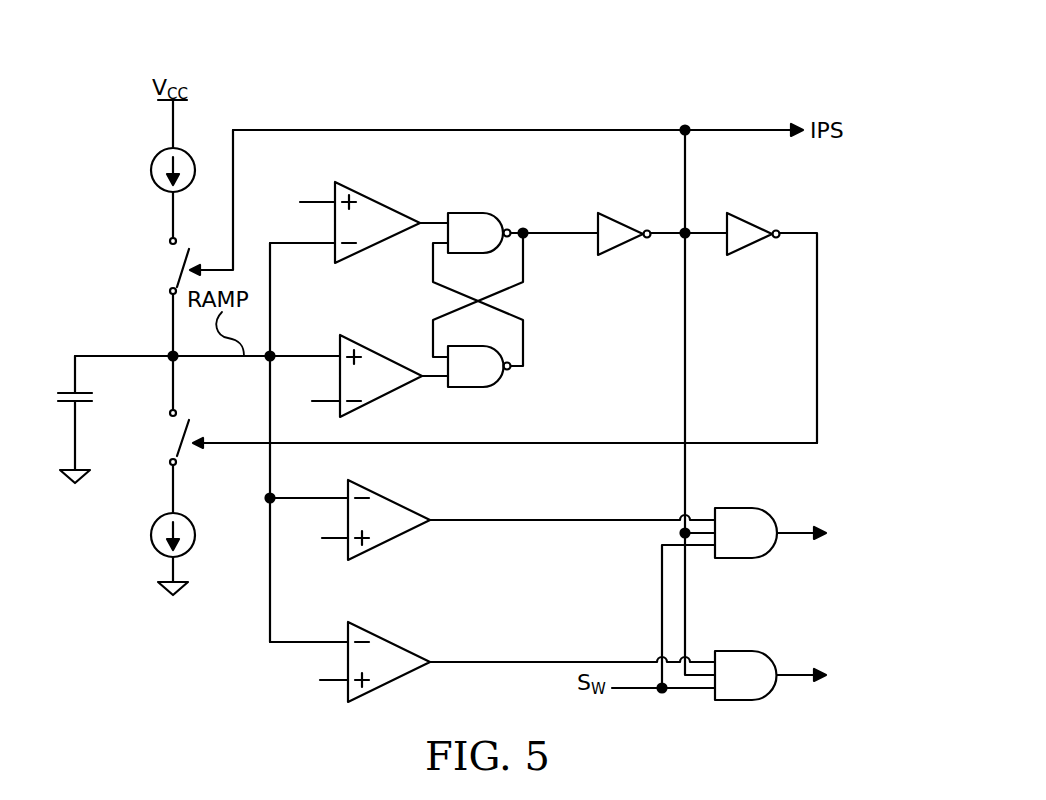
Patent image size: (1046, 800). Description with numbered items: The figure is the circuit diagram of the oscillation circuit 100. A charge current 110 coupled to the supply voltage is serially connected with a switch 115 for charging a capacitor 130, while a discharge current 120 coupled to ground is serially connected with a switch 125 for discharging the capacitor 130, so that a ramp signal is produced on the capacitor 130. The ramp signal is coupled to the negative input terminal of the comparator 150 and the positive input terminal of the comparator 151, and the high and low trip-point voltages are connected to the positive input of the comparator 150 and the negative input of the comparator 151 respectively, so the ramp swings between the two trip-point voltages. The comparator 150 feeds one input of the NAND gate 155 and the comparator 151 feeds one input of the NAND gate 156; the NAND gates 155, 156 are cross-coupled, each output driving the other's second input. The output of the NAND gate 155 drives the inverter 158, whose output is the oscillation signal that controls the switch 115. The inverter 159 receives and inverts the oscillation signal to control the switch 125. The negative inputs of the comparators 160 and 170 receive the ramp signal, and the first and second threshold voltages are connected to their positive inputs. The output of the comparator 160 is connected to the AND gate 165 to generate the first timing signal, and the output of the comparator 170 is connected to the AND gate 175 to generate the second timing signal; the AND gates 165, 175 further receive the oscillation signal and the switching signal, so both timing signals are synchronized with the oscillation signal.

The oscillation circuit 100 is at (902, 83).
The charge current 110 is at (152, 170).
The switch 115 is at (184, 268).
The discharge current 120 is at (152, 548).
The switch 125 is at (181, 440).
The capacitor 130 is at (58, 392).
The comparator 150 is at (362, 194).
The comparator 151 is at (362, 342).
The NAND gate 155 is at (470, 213).
The NAND gate 156 is at (472, 388).
The inverter 158 is at (620, 250).
The inverter 159 is at (748, 250).
The comparator 160 is at (375, 492).
The AND gate 165 is at (748, 508).
The comparator 170 is at (370, 632).
The AND gate 175 is at (736, 651).